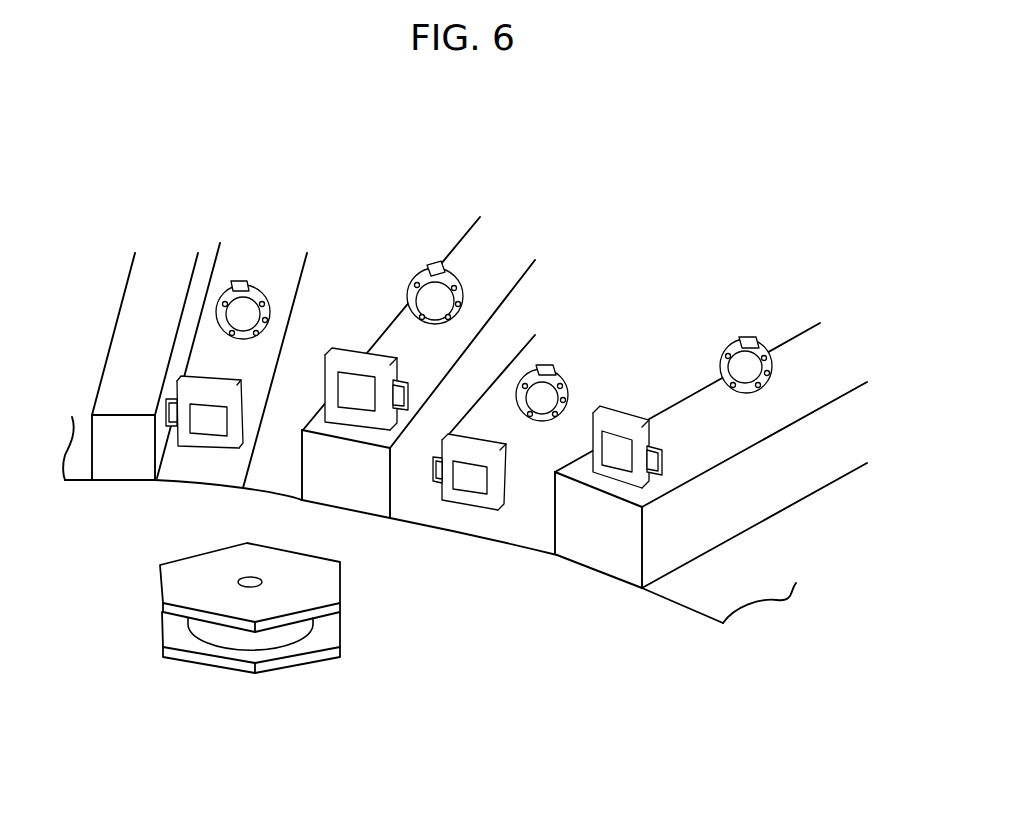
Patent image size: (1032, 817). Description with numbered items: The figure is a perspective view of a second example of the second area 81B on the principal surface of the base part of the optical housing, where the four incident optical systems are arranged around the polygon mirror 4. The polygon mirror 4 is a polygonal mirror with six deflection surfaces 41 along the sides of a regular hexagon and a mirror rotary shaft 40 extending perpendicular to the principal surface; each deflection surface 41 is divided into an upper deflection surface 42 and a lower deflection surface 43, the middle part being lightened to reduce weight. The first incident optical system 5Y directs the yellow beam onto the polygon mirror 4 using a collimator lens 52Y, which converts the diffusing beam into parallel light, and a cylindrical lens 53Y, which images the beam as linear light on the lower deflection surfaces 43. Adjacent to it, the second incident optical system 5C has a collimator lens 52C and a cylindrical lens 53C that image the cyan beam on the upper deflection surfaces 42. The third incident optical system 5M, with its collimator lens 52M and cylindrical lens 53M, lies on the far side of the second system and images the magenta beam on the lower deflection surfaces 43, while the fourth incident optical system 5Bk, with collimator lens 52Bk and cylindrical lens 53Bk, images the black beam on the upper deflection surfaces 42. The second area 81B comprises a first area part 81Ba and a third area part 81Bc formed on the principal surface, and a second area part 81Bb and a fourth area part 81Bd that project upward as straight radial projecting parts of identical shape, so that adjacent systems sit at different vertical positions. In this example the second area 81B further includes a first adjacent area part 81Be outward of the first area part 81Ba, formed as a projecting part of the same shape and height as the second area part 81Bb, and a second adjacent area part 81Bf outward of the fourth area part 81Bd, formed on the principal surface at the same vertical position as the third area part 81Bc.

The polygon mirror 4 is at (311, 629).
The mirror rotary shaft 40 is at (250, 582).
The deflection surface 41 is at (313, 611).
The upper deflection surface 42 is at (325, 610).
The lower deflection surface 43 is at (328, 655).
The first incident optical system 5Y is at (268, 192).
The second incident optical system 5C is at (458, 168).
The third incident optical system 5M is at (658, 288).
The fourth incident optical system 5Bk is at (802, 235).
The collimator lens 52Y is at (230, 312).
The collimator lens 52C is at (422, 290).
The collimator lens 52M is at (563, 382).
The collimator lens 52Bk is at (757, 355).
The cylindrical lens 53Y is at (183, 397).
The cylindrical lens 53C is at (343, 353).
The cylindrical lens 53M is at (487, 447).
The cylindrical lens 53Bk is at (620, 413).
The second area 81B is at (753, 582).
The first area part 81Ba is at (197, 473).
The second area part 81Bb is at (388, 439).
The third area part 81Bc is at (533, 530).
The fourth area part 81Bd is at (617, 488).
The first adjacent area part 81Be is at (133, 398).
The second adjacent area part 81Bf is at (710, 600).